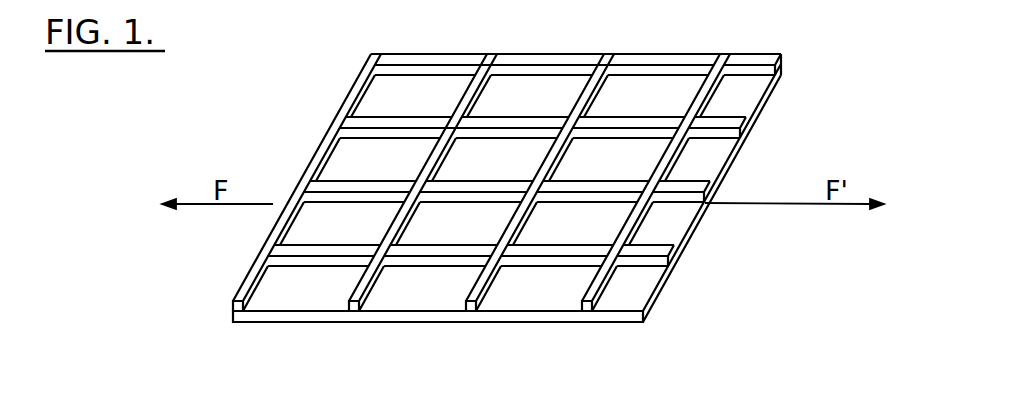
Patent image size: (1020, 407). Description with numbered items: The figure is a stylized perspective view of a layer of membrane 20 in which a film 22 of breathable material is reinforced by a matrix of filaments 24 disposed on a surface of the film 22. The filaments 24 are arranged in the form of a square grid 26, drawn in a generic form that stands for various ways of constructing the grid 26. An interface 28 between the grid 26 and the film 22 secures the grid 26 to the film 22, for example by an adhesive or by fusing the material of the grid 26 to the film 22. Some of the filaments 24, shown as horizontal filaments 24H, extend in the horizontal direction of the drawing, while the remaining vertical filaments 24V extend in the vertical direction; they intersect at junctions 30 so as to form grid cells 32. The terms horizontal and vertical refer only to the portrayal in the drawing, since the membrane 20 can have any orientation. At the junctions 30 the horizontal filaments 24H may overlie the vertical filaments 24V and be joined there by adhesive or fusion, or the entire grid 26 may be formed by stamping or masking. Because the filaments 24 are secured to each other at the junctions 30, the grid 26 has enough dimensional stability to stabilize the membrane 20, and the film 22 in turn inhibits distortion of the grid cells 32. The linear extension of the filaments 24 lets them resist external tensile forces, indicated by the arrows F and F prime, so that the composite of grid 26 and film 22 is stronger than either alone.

The membrane 20 is at (519, 187).
The film 22 is at (658, 296).
The filaments 24 is at (507, 214).
The horizontal filaments 24H is at (720, 130).
The vertical filaments 24V is at (281, 223).
The grid 26 is at (424, 100).
The interface 28 is at (423, 260).
The junctions 30 is at (617, 67).
The grid cells 32 is at (370, 150).